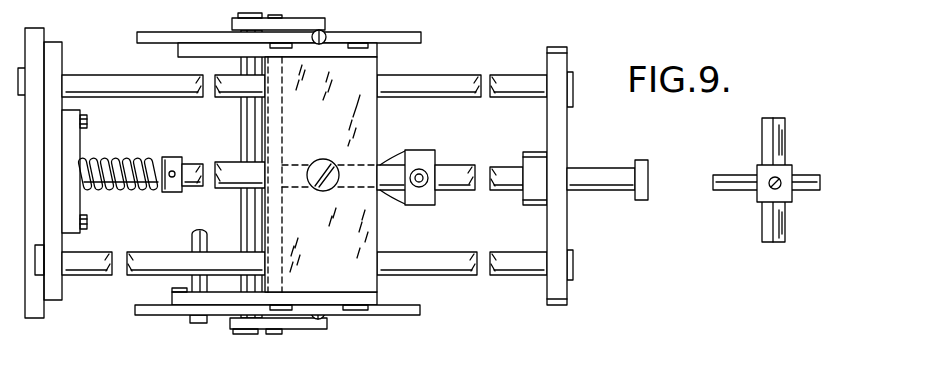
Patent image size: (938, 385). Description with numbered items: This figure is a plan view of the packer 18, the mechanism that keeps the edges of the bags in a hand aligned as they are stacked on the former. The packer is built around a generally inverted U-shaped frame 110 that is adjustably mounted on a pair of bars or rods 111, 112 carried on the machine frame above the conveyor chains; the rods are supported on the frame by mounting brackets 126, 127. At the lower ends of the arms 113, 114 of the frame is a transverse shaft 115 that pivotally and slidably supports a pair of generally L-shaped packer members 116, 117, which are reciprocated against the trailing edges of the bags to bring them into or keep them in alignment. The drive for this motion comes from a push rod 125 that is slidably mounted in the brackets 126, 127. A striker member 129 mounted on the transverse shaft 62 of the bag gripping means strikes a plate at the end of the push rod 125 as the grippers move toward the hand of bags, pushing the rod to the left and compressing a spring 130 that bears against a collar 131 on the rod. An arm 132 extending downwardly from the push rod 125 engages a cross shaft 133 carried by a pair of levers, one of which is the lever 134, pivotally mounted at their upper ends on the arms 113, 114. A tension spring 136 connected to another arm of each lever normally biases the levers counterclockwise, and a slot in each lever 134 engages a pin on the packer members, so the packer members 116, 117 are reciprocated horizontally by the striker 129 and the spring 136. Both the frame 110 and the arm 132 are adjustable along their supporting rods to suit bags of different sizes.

The packer 18 is at (447, 281).
The transverse shaft 62 is at (766, 227).
The inverted U-shaped frame 110 is at (339, 254).
The guide rod 111 is at (438, 258).
The guide rod 112 is at (460, 93).
The arm 113 is at (335, 312).
The arm 114 is at (378, 50).
The transverse shaft 115 is at (199, 231).
The packer member 116 is at (398, 313).
The packer member 117 is at (420, 38).
The push rod 125 is at (614, 192).
The mounting bracket 126 is at (563, 135).
The mounting bracket 127 is at (38, 142).
The striker member 129 is at (760, 169).
The spring 130 is at (125, 191).
The collar 131 is at (172, 159).
The arm 132 is at (402, 196).
The cross shaft 133 is at (283, 124).
The lever 134 is at (234, 22).
The tension spring 136 is at (316, 319).